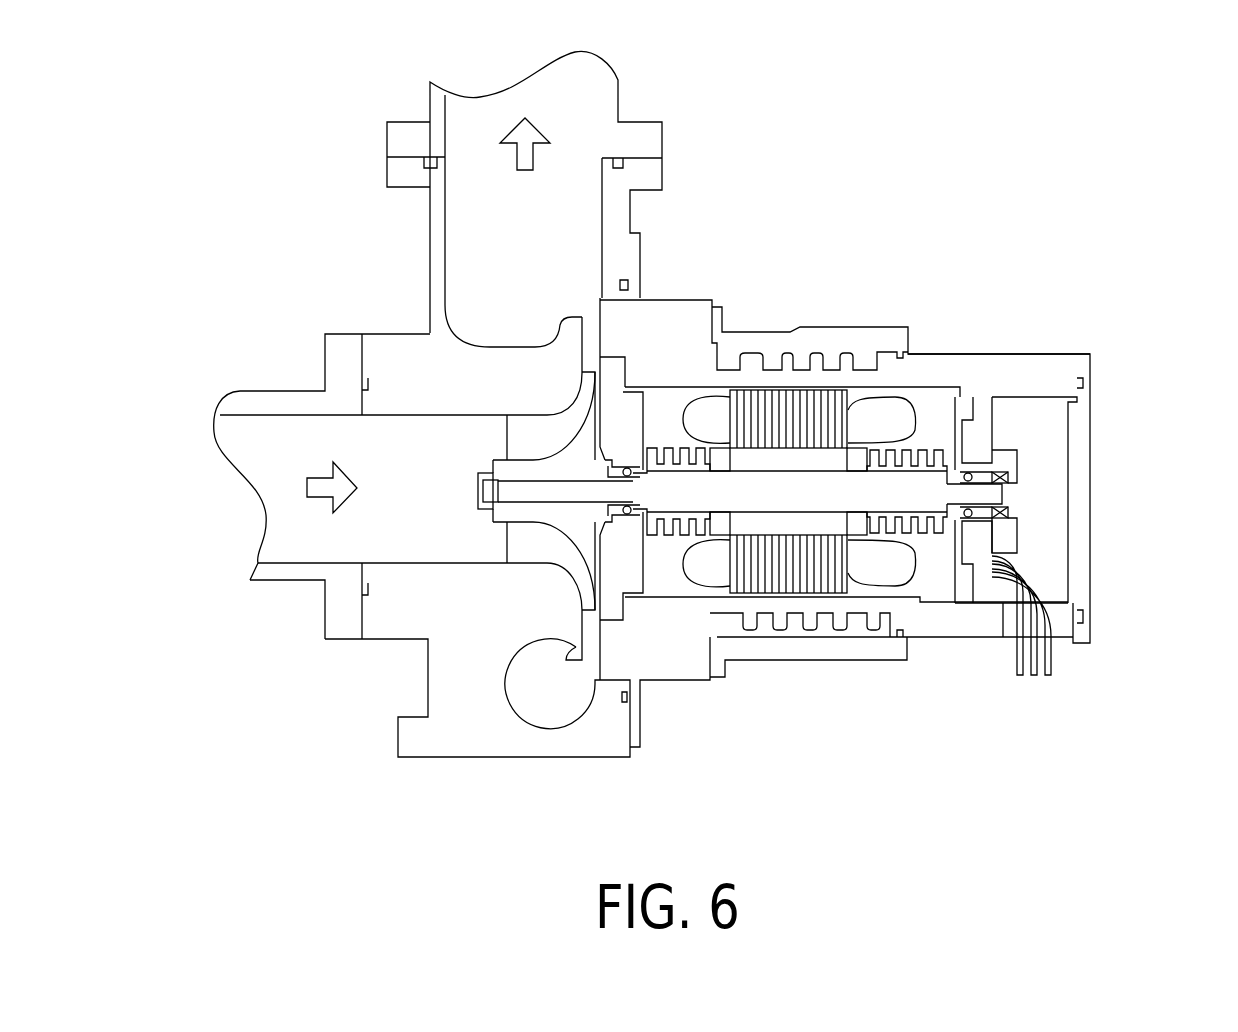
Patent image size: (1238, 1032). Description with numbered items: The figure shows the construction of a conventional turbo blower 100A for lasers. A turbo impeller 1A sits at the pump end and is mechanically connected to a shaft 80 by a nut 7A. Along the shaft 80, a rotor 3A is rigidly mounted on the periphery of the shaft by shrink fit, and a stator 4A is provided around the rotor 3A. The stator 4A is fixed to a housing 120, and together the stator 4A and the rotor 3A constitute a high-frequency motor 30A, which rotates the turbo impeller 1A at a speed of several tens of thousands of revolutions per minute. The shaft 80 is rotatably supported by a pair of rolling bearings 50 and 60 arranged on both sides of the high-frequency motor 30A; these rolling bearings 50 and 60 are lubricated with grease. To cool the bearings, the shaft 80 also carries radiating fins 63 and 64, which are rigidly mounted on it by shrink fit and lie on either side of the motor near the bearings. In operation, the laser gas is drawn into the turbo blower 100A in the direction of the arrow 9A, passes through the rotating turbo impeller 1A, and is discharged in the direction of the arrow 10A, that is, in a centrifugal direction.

The turbo blower 100A is at (857, 85).
The arrow 10A is at (537, 128).
The arrow 9A is at (317, 475).
The rolling bearing 50 is at (597, 605).
The nut 7A is at (487, 507).
The turbo impeller 1A is at (523, 563).
The radiating fin 63 is at (657, 447).
The radiating fin 64 is at (922, 453).
The high-frequency motor 30A is at (867, 396).
The stator 4A is at (723, 596).
The rotor 3A is at (847, 520).
The shaft 80 is at (913, 540).
The housing 120 is at (1060, 355).
The rolling bearing 60 is at (1060, 640).